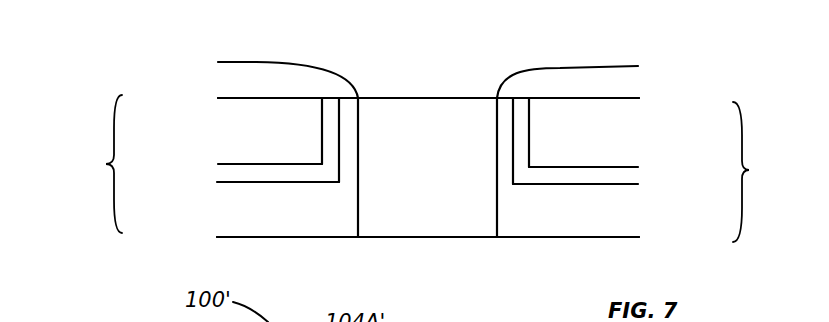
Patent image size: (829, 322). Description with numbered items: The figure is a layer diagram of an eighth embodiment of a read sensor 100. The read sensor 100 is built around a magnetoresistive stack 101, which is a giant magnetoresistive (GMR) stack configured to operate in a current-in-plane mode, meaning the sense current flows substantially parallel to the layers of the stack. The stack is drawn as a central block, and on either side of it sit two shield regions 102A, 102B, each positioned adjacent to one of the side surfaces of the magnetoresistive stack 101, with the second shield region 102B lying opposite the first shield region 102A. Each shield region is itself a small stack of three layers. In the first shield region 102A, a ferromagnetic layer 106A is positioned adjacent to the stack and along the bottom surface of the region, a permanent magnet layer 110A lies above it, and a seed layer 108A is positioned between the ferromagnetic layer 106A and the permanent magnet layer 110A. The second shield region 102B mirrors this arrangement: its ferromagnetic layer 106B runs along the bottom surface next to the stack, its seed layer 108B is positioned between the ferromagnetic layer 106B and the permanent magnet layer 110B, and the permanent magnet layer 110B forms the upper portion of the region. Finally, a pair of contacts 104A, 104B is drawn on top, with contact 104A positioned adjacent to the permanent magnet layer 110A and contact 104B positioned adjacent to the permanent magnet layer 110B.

The read sensor 100 is at (298, 31).
The magnetoresistive stack 101 is at (393, 115).
The shield region 102A is at (81, 164).
The shield region 102B is at (770, 172).
The contact 104A is at (237, 79).
The contact 104B is at (620, 83).
The ferromagnetic layer 106A is at (240, 211).
The ferromagnetic layer 106B is at (618, 203).
The seed layer 108A is at (233, 172).
The seed layer 108B is at (615, 177).
The permanent magnet layer 110A is at (235, 117).
The permanent magnet layer 110B is at (626, 120).